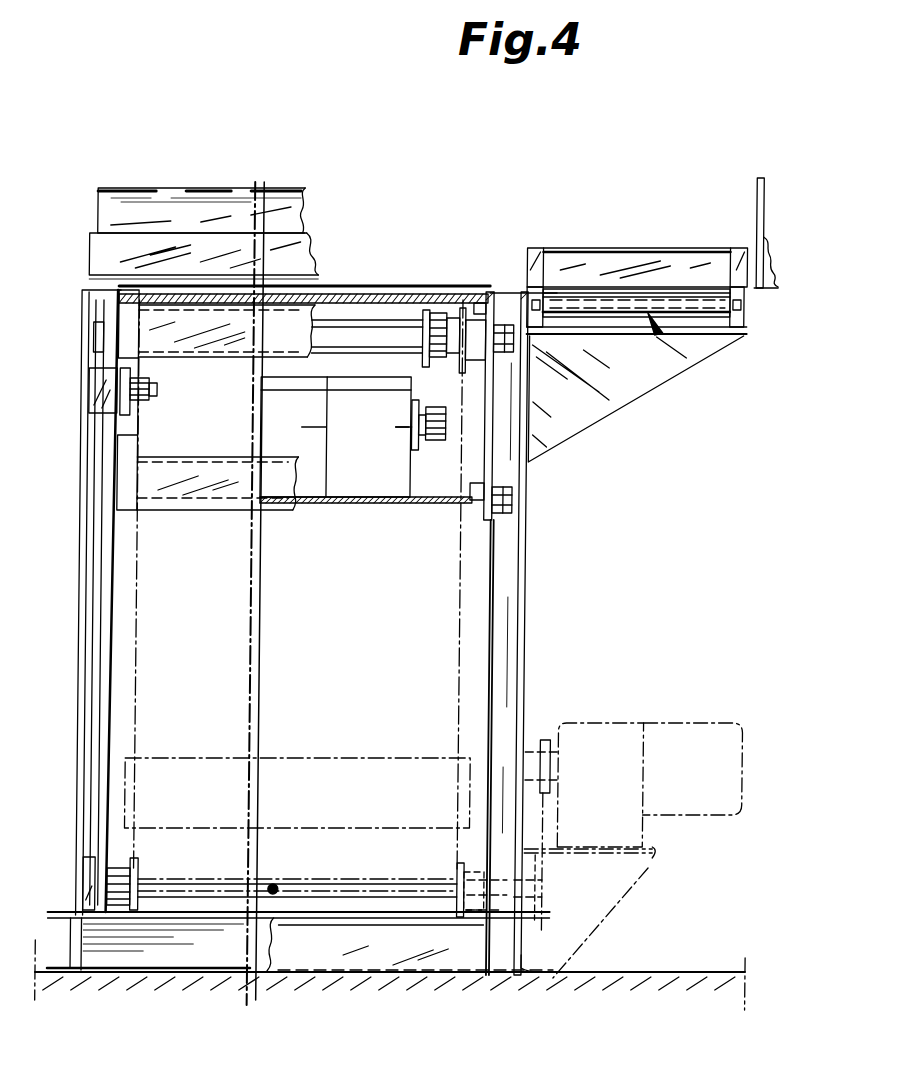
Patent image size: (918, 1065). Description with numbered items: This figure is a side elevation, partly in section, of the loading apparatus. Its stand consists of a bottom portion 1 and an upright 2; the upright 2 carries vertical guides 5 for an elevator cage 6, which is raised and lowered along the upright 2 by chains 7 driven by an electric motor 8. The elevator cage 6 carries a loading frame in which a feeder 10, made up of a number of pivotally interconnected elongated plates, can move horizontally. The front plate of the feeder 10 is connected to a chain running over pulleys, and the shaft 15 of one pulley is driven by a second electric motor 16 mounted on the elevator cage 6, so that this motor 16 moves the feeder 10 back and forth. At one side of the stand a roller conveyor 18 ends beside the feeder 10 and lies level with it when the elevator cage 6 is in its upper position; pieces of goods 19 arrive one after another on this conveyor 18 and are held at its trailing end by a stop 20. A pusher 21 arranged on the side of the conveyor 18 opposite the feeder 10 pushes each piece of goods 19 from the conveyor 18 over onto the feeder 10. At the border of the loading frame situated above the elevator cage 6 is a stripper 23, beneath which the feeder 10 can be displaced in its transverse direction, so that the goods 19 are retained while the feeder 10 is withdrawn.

The bottom portion 1 is at (142, 957).
The upright 2 is at (69, 694).
The vertical guides 5 is at (95, 594).
The elevator cage 6 is at (370, 367).
The chains 7 is at (143, 693).
The electric motor 8 is at (610, 737).
The feeder 10 is at (376, 292).
The shaft 15 is at (423, 448).
The electric motor 16 is at (352, 470).
The roller conveyor 18 is at (655, 325).
The pieces of goods 19 is at (139, 205).
The stop 20 is at (623, 260).
The pusher 21 is at (757, 223).
The stripper 23 is at (199, 260).